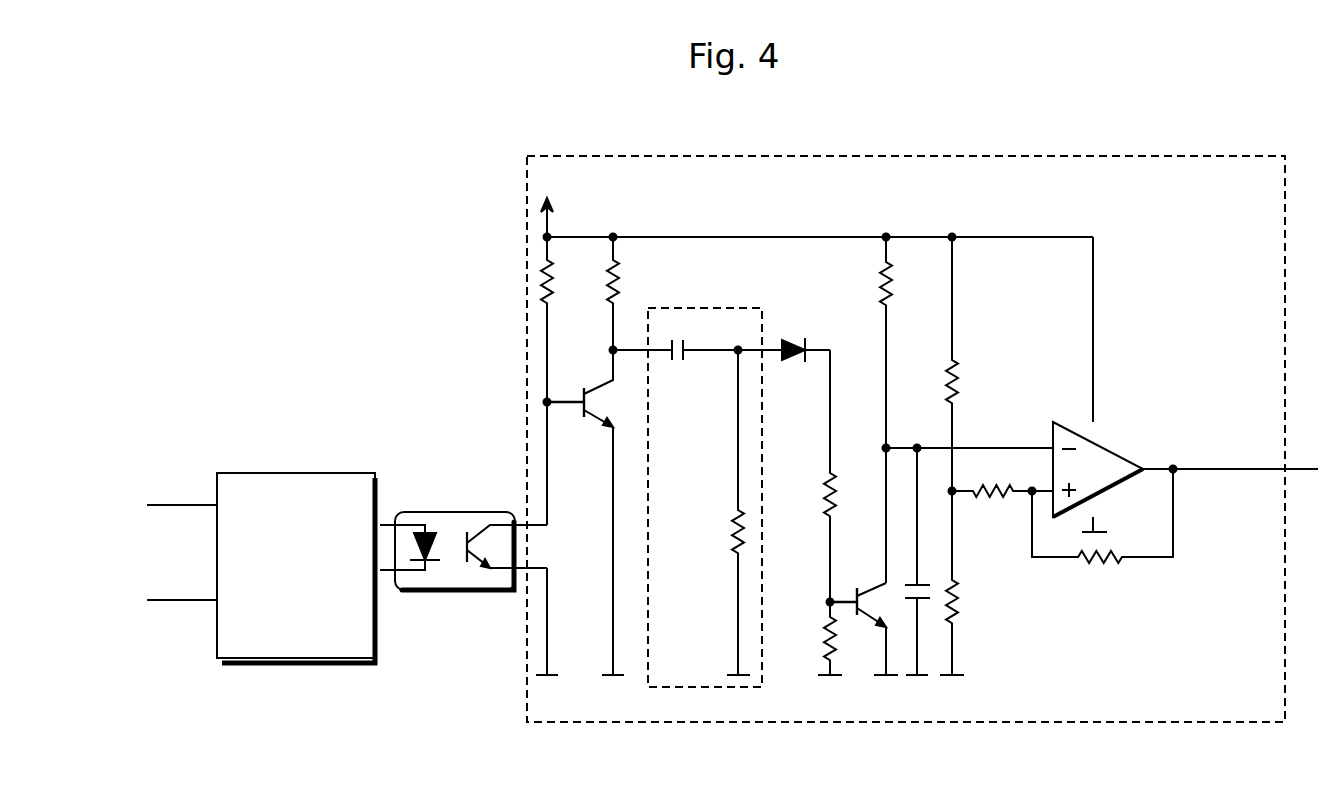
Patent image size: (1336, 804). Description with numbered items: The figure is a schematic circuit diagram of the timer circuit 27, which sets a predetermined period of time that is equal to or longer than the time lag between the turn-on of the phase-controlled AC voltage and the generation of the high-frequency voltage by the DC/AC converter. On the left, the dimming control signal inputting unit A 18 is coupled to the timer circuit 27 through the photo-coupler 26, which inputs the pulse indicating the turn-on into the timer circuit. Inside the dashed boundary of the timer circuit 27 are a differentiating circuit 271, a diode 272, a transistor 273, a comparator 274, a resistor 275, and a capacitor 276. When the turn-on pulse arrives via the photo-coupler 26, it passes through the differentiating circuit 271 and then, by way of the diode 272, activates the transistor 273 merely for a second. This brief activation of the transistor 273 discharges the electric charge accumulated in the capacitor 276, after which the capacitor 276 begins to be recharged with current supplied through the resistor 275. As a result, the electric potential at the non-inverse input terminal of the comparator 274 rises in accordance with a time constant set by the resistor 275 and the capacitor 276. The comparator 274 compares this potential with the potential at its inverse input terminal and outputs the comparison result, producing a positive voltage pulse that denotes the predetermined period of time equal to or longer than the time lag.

The dimming control signal inputting unit A 18 is at (325, 473).
The photo-coupler 26 is at (450, 512).
The timer circuit 27 is at (798, 156).
The differentiating circuit 271 is at (695, 688).
The diode 272 is at (788, 345).
The transistor 273 is at (888, 608).
The comparator 274 is at (1108, 448).
The resistor 275 is at (886, 280).
The capacitor 276 is at (923, 603).